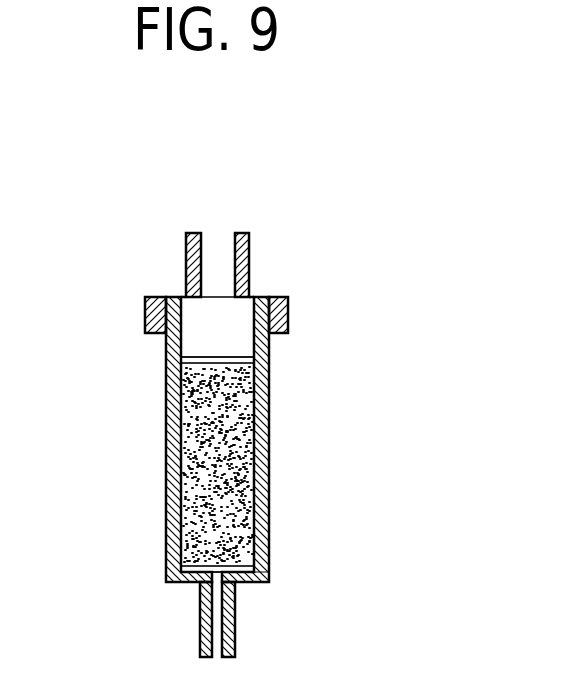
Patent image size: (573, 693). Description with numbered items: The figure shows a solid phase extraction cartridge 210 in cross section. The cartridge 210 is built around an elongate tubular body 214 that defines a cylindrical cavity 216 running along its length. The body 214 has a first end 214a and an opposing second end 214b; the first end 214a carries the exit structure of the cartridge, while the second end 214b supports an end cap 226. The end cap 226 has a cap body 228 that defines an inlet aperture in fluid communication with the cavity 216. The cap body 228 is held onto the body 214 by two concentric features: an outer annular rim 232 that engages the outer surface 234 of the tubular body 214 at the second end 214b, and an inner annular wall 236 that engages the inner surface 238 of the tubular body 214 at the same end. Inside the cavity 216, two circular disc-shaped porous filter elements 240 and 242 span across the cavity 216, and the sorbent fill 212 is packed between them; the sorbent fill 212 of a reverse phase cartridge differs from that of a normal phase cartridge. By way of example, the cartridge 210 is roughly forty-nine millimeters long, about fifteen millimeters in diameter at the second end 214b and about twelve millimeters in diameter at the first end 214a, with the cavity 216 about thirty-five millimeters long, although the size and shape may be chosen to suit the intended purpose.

The SPE cartridge 210 is at (133, 145).
The sorbent fill 212 is at (193, 508).
The elongate tubular body 214 is at (269, 472).
The first end 214a is at (300, 610).
The second end 214b is at (380, 304).
The cylindrical cavity 216 is at (166, 380).
The end cap 226 is at (147, 307).
The cap body 228 is at (160, 297).
The outer annular rim 232 is at (288, 317).
The outer surface 234 is at (269, 437).
The inner annular wall 236 is at (166, 352).
The inner surface 238 is at (183, 440).
The porous filter element 240 is at (230, 562).
The porous filter element 242 is at (230, 368).